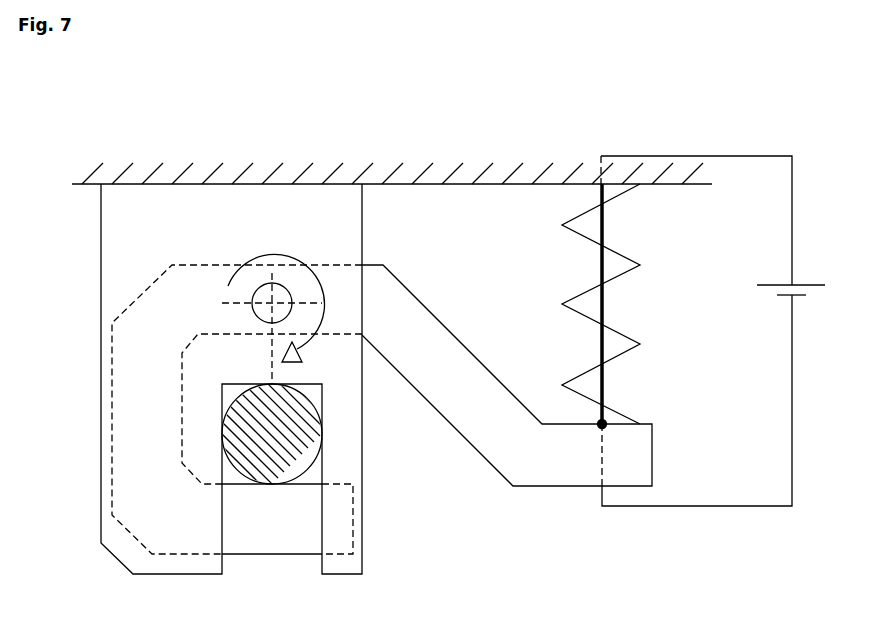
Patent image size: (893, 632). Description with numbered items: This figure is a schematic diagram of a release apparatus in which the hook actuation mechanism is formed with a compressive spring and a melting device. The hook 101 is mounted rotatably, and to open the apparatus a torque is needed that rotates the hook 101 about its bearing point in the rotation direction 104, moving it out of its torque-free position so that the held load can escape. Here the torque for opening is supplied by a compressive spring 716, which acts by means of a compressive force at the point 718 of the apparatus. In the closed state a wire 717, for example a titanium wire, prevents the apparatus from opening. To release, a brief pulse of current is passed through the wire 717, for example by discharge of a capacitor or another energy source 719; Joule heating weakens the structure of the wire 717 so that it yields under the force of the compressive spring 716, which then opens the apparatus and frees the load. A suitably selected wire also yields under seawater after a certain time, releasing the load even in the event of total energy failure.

The rotation direction 104 is at (303, 265).
The hook 101 is at (446, 377).
The compressive spring 716 is at (572, 218).
The wire 717 is at (602, 304).
The point 718 is at (602, 424).
The energy source 719 is at (795, 283).